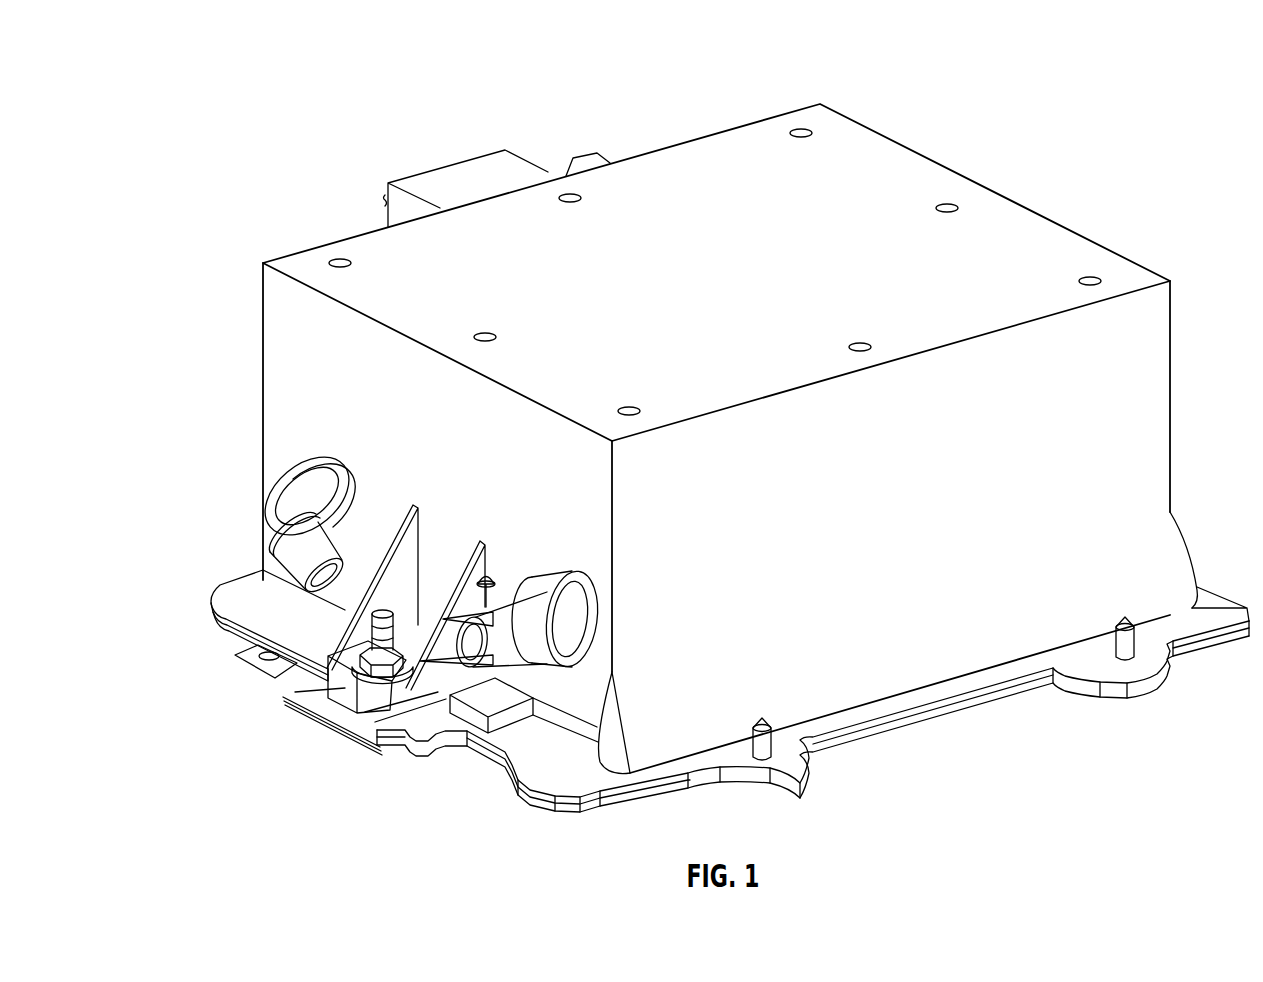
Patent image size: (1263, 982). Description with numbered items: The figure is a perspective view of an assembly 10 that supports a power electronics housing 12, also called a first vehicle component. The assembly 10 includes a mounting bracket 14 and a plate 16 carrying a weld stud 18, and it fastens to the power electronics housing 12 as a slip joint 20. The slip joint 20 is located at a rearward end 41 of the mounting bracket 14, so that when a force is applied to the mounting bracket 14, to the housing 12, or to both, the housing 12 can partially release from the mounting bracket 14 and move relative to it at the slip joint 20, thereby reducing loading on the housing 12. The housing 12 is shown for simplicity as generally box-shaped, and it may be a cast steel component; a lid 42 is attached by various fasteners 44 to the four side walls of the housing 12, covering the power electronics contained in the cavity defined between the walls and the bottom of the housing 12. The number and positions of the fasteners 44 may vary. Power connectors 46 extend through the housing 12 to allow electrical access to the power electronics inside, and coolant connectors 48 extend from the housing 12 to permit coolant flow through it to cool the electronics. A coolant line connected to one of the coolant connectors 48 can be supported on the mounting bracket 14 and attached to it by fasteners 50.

The assembly 10 is at (325, 86).
The power electronics housing 12 is at (1148, 380).
The mounting bracket 14 is at (536, 796).
The plate 16 is at (337, 708).
The weld stud 18 is at (388, 604).
The slip joint 20 is at (348, 742).
The rearward end 41 is at (237, 633).
The lid 42 is at (1018, 232).
The fasteners 44 is at (340, 257).
The power connectors 46 is at (429, 181).
The coolant connectors 48 is at (298, 578).
The fasteners 50 is at (769, 744).